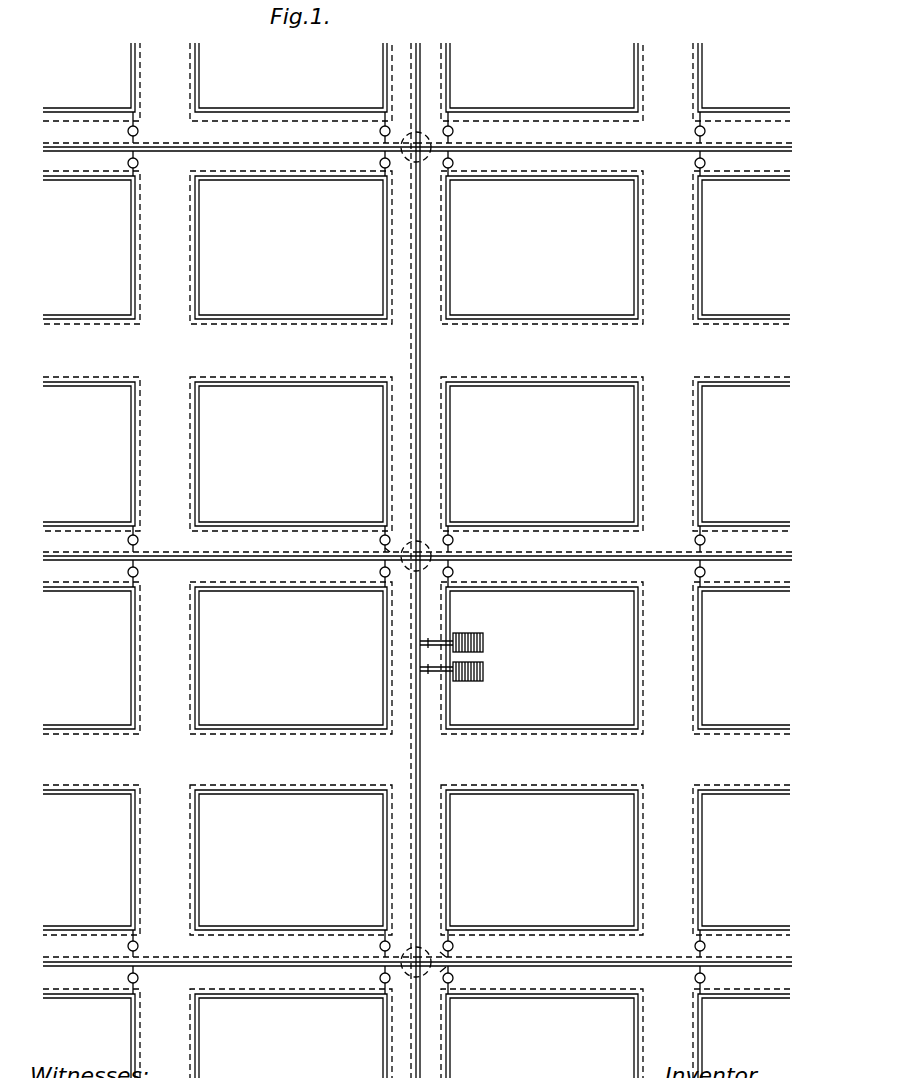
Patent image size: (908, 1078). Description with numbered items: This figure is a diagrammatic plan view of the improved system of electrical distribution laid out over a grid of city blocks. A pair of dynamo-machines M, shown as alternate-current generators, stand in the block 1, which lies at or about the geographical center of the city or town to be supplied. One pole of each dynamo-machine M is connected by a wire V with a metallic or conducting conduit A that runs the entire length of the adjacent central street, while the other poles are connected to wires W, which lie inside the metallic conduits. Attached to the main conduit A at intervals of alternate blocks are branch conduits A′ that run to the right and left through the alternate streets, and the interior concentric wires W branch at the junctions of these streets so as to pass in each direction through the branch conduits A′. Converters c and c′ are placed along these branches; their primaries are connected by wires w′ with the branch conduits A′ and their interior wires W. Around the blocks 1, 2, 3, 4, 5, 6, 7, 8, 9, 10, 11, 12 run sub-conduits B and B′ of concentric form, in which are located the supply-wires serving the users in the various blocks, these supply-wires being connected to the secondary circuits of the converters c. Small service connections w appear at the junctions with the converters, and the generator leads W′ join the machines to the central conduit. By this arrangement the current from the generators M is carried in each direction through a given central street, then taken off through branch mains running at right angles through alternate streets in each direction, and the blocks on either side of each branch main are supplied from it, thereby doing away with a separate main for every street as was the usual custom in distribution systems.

The block 1 is at (542, 555).
The block 2 is at (291, 183).
The block 3 is at (542, 183).
The block 4 is at (291, 555).
The block 5 is at (542, 931).
The block 6 is at (291, 931).
The block 7 is at (741, 183).
The block 8 is at (91, 183).
The block 9 is at (741, 555).
The block 10 is at (91, 555).
The block 11 is at (741, 931).
The block 12 is at (91, 931).
The main conduit A is at (419, 560).
The branch conduit A′ is at (574, 147).
The sub-conduit B is at (700, 97).
The sub-conduit B′ is at (450, 88).
The converter c is at (380, 131).
The converter c′ is at (453, 163).
The service pipe w is at (441, 972).
The wire w′ is at (382, 549).
The wire W is at (420, 669).
The service pipe to meter W′ is at (418, 646).
The wire V is at (429, 640).
The dynamo-machine M is at (484, 642).